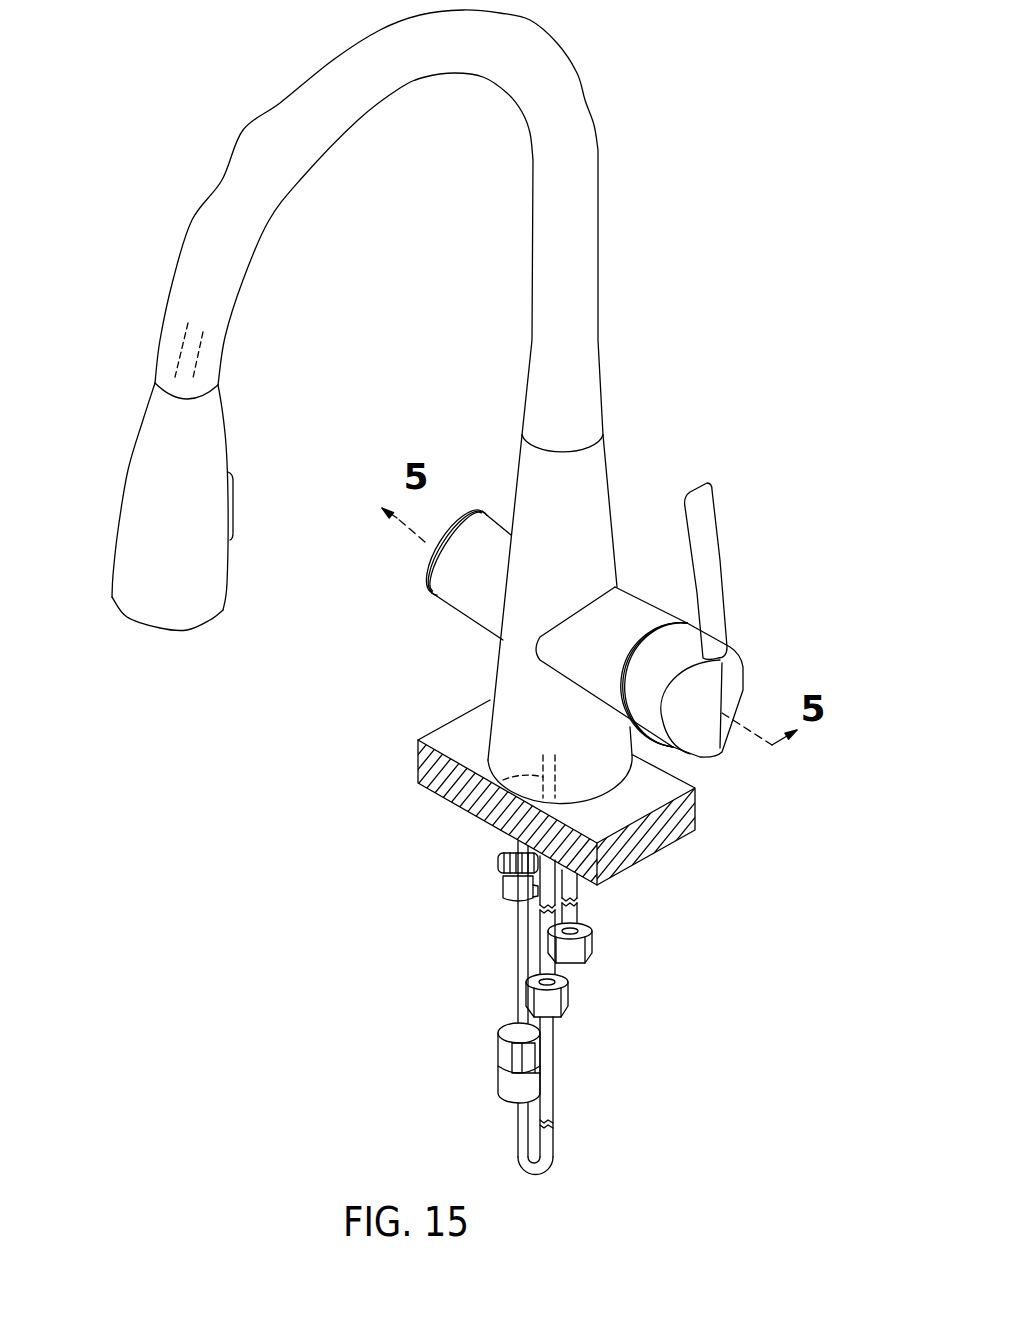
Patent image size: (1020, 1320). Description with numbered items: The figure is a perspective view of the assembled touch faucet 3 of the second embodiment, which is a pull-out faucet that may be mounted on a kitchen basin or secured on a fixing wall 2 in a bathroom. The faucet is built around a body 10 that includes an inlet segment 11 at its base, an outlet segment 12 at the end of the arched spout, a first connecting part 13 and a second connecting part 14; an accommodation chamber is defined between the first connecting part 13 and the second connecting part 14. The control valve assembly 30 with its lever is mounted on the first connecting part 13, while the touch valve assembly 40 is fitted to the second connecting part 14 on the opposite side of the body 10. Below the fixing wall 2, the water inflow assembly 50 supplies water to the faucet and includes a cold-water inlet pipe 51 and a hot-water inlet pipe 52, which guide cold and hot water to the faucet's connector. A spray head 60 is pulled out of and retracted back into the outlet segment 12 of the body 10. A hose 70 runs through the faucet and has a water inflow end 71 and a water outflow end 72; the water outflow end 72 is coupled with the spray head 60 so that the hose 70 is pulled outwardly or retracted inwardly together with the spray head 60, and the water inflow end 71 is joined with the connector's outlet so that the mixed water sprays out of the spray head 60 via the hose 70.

The fixing wall 2 is at (452, 737).
The touch faucet 3 is at (642, 283).
The body 10 is at (613, 373).
The inlet segment 11 is at (603, 780).
The outlet segment 12 is at (160, 330).
The first connecting part 13 is at (638, 608).
The second connecting part 14 is at (467, 603).
The control valve assembly 30 is at (747, 670).
The touch valve assembly 40 is at (414, 567).
The water inflow assembly 50 is at (593, 897).
The cold-water inlet pipe 51 is at (537, 922).
The hot-water inlet pipe 52 is at (582, 910).
The spray head 60 is at (122, 513).
The hose 70 is at (561, 1060).
The water inflow end 71 is at (491, 788).
The water outflow end 72 is at (193, 352).